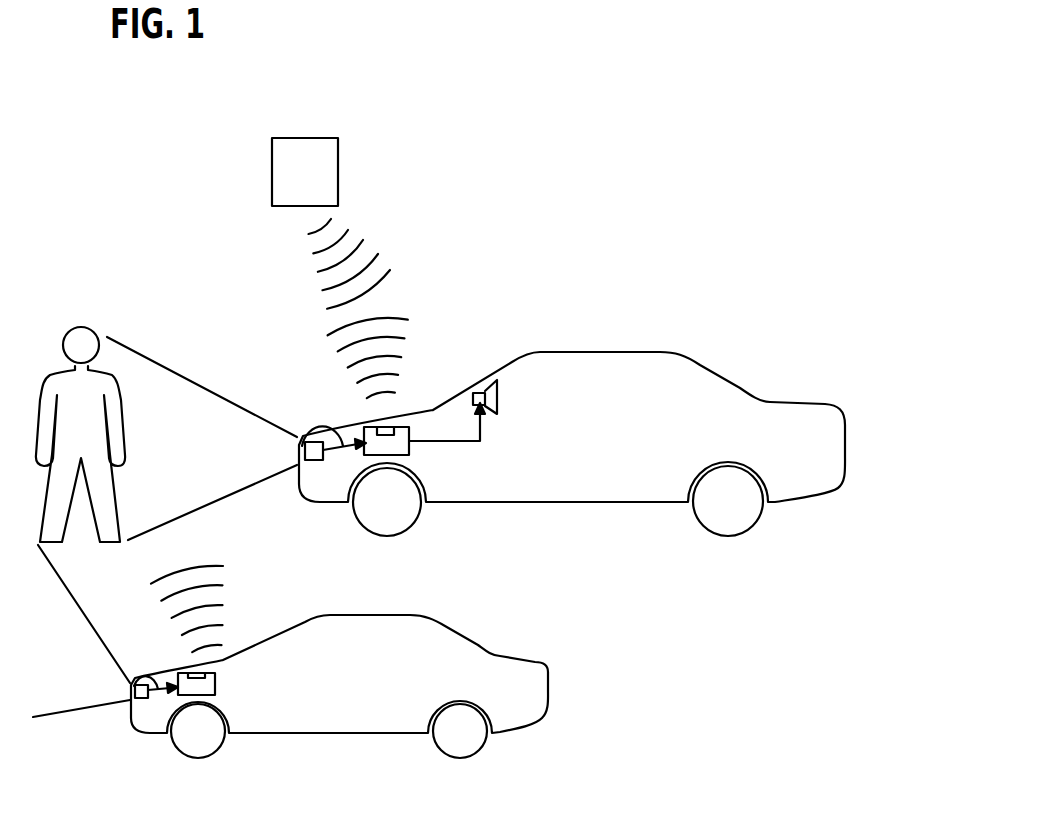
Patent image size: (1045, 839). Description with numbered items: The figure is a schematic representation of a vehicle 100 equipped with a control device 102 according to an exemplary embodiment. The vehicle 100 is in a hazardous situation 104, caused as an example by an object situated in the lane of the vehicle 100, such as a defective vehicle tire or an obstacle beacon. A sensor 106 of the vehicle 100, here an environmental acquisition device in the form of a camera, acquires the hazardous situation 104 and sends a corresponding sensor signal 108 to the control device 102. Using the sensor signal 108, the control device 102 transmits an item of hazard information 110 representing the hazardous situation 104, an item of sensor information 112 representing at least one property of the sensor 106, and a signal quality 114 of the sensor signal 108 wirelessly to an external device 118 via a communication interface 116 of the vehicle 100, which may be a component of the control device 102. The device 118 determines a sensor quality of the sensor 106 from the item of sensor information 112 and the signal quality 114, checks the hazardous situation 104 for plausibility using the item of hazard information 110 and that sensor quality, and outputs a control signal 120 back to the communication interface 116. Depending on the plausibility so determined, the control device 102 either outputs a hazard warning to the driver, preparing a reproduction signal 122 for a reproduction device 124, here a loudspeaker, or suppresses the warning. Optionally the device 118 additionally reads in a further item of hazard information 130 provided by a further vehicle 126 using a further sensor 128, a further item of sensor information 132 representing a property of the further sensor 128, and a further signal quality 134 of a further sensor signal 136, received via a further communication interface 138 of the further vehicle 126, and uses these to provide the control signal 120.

The vehicle 100 is at (642, 352).
The control device 102 is at (410, 452).
The hazardous situation 104 is at (205, 316).
The sensor 106 is at (303, 450).
The sensor signal 108 is at (330, 420).
The item of hazard information 110 is at (449, 319).
The item of sensor information 112 is at (375, 369).
The signal quality 114 is at (381, 395).
The communication interface 116 is at (385, 427).
The external device 118 is at (338, 170).
The control signal 120 is at (328, 288).
The reproduction signal 122 is at (497, 440).
The reproduction device 124 is at (500, 398).
The further vehicle 126 is at (548, 692).
The further sensor 128 is at (134, 690).
The further item of hazard information 130 is at (278, 604).
The further item of sensor information 132 is at (197, 620).
The further signal quality 134 is at (206, 648).
The further sensor signal 136 is at (152, 672).
The further communication interface 138 is at (216, 680).